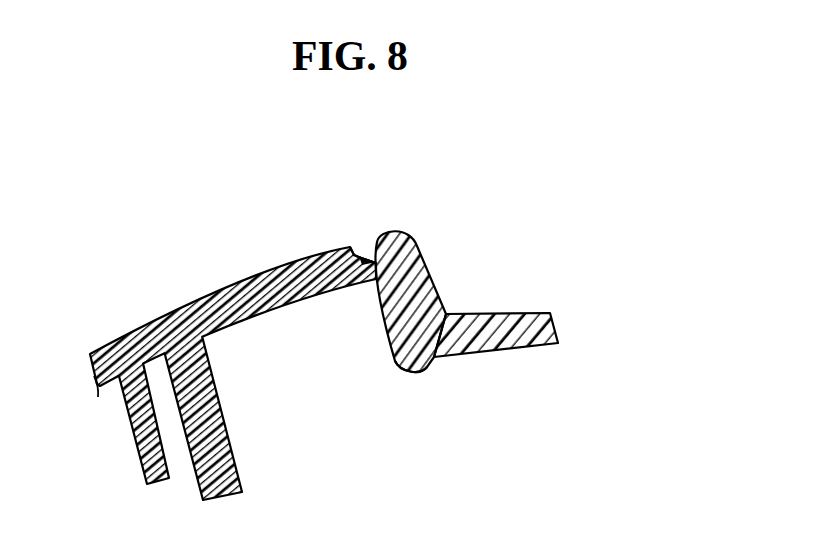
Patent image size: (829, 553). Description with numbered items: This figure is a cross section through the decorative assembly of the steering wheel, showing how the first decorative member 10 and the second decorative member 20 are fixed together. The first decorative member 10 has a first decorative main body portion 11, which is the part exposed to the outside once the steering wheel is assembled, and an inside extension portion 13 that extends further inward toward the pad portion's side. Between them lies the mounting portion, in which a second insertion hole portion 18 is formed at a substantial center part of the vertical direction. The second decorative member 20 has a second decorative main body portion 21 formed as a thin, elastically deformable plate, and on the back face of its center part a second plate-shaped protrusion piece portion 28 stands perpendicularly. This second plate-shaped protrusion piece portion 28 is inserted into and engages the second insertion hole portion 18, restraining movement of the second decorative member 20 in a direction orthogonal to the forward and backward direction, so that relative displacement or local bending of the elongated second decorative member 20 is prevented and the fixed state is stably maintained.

The first decorative member 10 is at (119, 330).
The first decorative main body portion 11 is at (228, 304).
The inside extension portion 13 is at (547, 316).
The second insertion hole portion 18 is at (374, 319).
The second decorative member 20 is at (423, 245).
The second decorative main body portion 21 is at (378, 240).
The second plate-shaped protrusion piece portion 28 is at (417, 372).